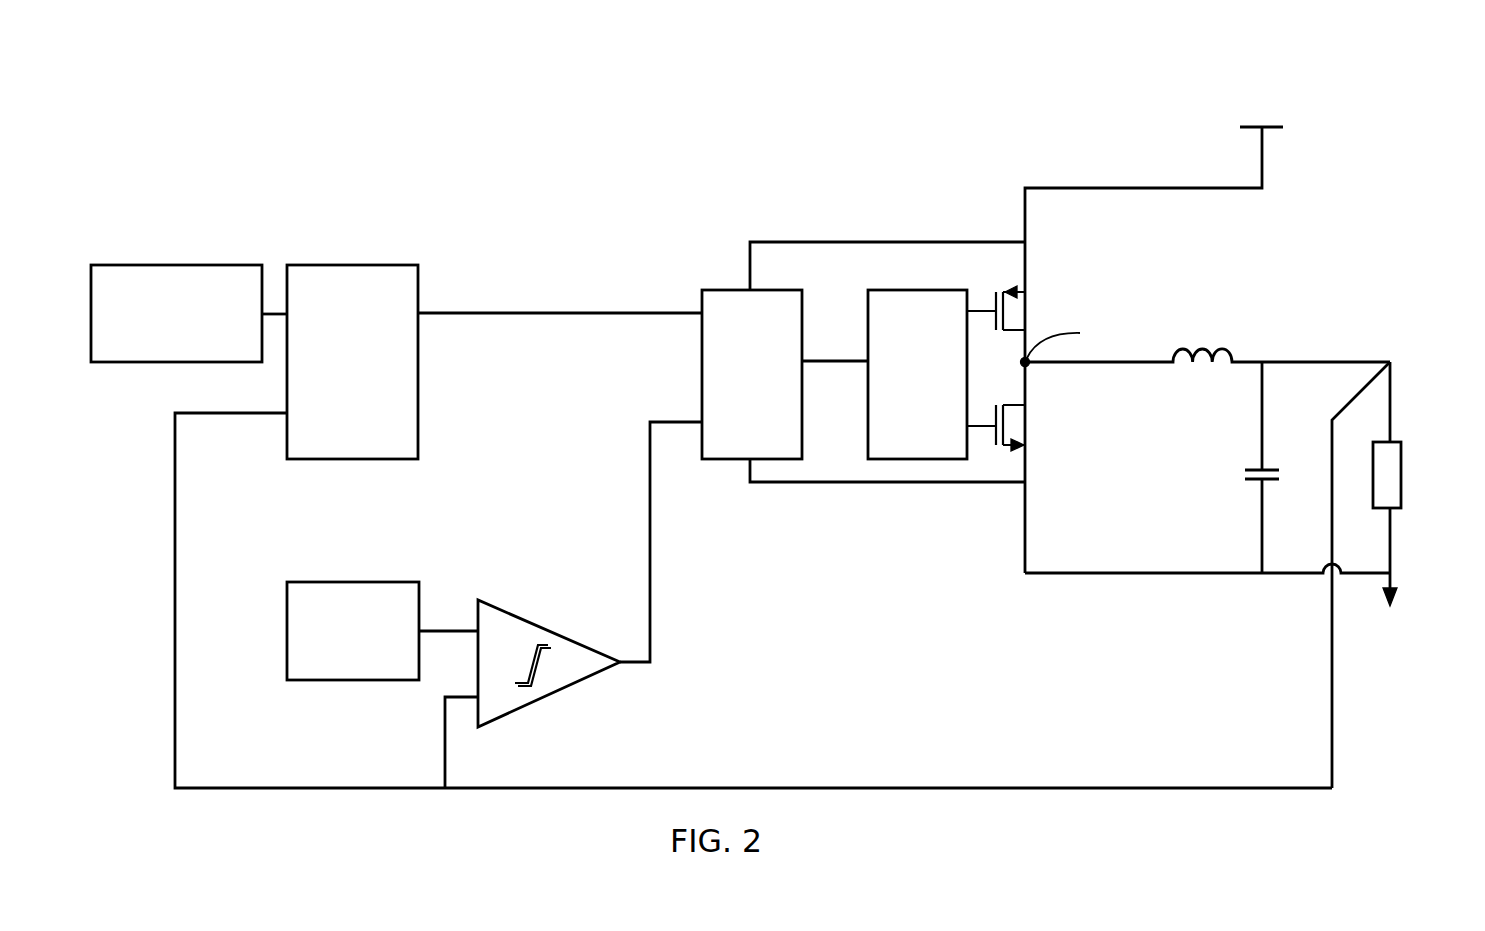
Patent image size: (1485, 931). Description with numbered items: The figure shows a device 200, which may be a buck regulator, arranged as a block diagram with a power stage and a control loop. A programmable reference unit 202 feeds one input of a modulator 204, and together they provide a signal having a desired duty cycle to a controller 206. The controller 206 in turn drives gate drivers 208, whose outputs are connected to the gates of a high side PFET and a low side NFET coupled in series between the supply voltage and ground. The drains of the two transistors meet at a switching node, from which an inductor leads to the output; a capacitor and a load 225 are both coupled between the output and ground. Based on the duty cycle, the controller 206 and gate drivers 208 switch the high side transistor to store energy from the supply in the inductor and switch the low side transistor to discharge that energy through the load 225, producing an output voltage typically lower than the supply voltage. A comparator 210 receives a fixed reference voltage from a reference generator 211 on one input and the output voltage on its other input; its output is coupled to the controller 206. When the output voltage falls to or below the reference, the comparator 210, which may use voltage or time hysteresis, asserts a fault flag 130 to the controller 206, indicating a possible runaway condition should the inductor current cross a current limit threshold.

The device 200 is at (1130, 85).
The programmable reference unit 202 is at (188, 265).
The modulator 204 is at (345, 265).
The controller 206 is at (775, 290).
The gate drivers 208 is at (907, 290).
The comparator 210 is at (533, 623).
The reference generator 211 is at (343, 582).
The fault flag 130 is at (650, 570).
The load 225 is at (1402, 500).